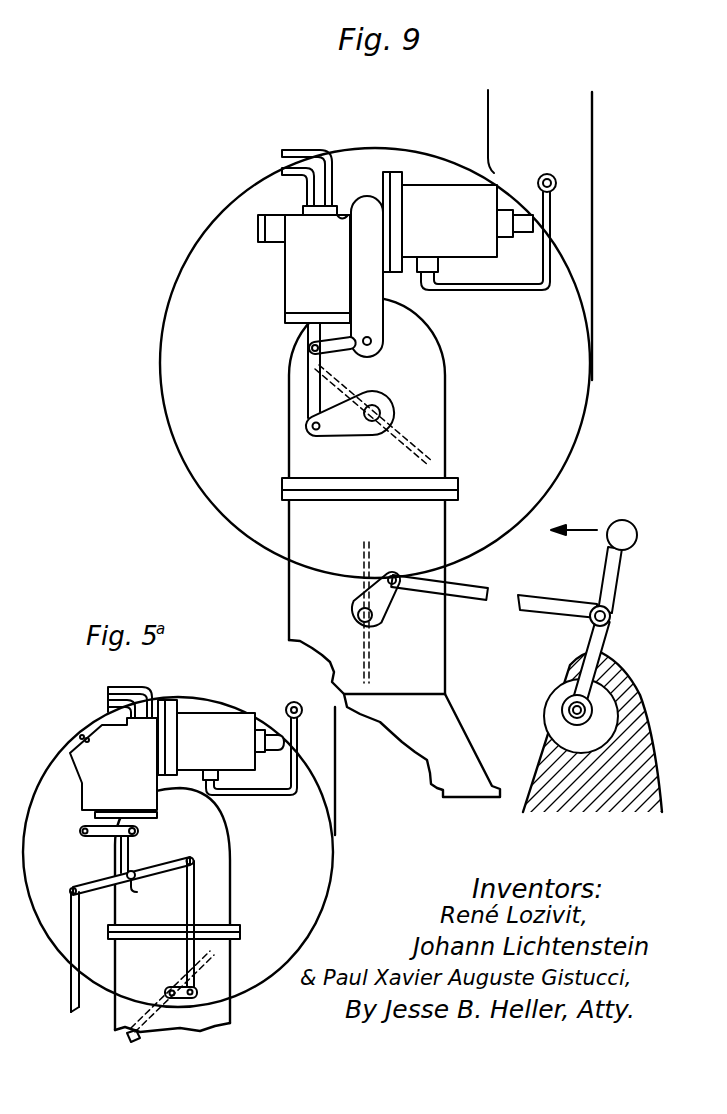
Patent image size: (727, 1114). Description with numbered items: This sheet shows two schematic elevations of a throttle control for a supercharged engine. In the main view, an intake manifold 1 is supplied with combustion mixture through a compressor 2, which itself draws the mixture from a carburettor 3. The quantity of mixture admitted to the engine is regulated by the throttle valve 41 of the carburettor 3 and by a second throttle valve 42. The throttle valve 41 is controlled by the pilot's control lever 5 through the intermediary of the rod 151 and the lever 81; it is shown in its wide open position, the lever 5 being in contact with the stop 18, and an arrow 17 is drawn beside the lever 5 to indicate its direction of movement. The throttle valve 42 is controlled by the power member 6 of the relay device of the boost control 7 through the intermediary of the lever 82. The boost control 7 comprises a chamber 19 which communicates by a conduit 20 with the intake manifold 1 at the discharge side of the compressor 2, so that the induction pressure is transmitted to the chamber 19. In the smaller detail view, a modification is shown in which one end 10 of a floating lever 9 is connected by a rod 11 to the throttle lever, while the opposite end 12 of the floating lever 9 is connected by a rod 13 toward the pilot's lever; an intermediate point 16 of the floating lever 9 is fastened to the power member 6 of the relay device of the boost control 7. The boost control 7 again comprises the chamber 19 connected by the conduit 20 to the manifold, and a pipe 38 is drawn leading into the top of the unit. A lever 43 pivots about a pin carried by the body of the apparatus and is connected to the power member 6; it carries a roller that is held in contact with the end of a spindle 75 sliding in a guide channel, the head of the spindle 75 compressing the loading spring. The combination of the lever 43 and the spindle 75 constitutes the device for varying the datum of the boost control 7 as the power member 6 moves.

In FIG. 9, the intake manifold 1 is at (577, 131).
In FIG. 5a, the intake manifold 1 is at (320, 729).
In FIG. 9, the compressor 2 is at (177, 366).
In FIG. 9, the carburettor 3 is at (434, 537).
In FIG. 5a, the carburettor 3 is at (220, 1007).
In FIG. 9, the throttle valve 41 is at (363, 667).
In FIG. 9, the second throttle valve 42 is at (425, 435).
In FIG. 9, the pilot's control lever 5 is at (612, 590).
In FIG. 9, the power member 6 is at (312, 397).
In FIG. 5a, the power member 6 is at (126, 862).
In FIG. 9, the boost control 7 is at (293, 281).
In FIG. 9, the lever 81 is at (383, 603).
In FIG. 9, the lever 82 is at (340, 428).
In FIG. 5a, the floating lever 9 is at (160, 869).
In FIG. 5a, the end of floating lever 10 is at (200, 858).
In FIG. 5a, the rod 11 is at (189, 902).
In FIG. 5a, the opposite end of floating lever 12 is at (70, 889).
In FIG. 5a, the rod 13 is at (72, 946).
In FIG. 9, the rod 151 is at (536, 604).
In FIG. 5a, the intermediate point of floating lever 16 is at (135, 884).
In FIG. 9, the direction of movement arrow 17 is at (574, 516).
In FIG. 9, the stop 18 is at (603, 664).
In FIG. 9, the chamber 19 is at (440, 187).
In FIG. 5a, the chamber 19 is at (215, 722).
In FIG. 9, the conduit 20 is at (493, 285).
In FIG. 5a, the conduit 20 is at (263, 793).
In FIG. 5a, the tube 38 is at (117, 689).
In FIG. 5a, the lever 43 is at (113, 831).
In FIG. 5a, the spindle 75 is at (80, 824).